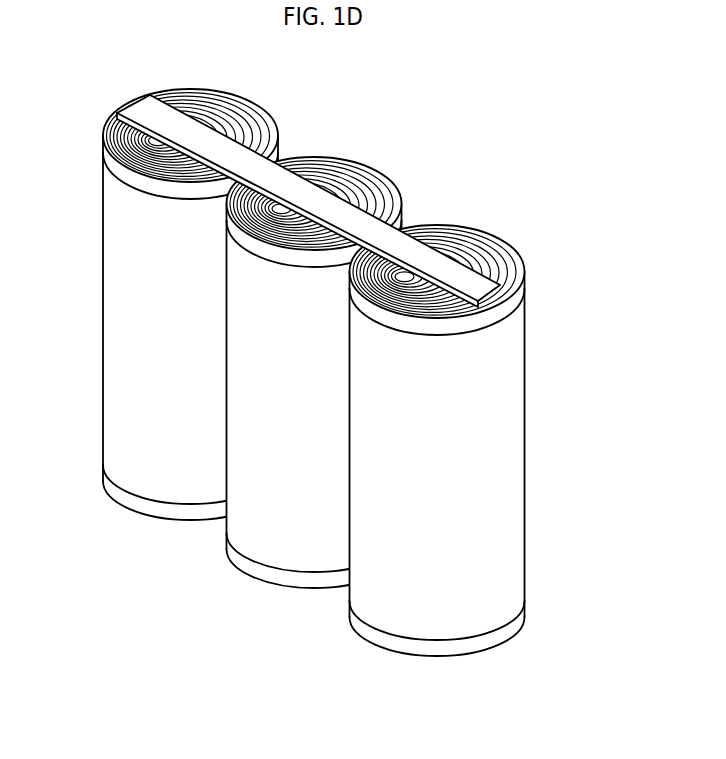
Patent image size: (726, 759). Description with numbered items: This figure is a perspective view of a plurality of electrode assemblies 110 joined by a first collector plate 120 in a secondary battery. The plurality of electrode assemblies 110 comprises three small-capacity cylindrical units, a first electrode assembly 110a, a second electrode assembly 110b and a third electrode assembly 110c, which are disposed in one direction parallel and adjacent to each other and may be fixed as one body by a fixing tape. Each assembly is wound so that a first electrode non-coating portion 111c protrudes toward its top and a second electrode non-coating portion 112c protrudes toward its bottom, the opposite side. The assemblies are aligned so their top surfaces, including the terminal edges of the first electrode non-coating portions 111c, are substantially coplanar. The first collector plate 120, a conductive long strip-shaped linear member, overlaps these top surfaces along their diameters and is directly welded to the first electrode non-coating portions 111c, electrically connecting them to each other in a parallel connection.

The plurality of electrode assemblies 110 is at (334, 408).
The first electrode assembly 110a is at (152, 483).
The second electrode assembly 110b is at (272, 543).
The third electrode assembly 110c is at (492, 471).
The first electrode non-coating portion 111c is at (500, 318).
The second electrode non-coating portion 112c is at (520, 621).
The first collector plate 120 is at (485, 291).